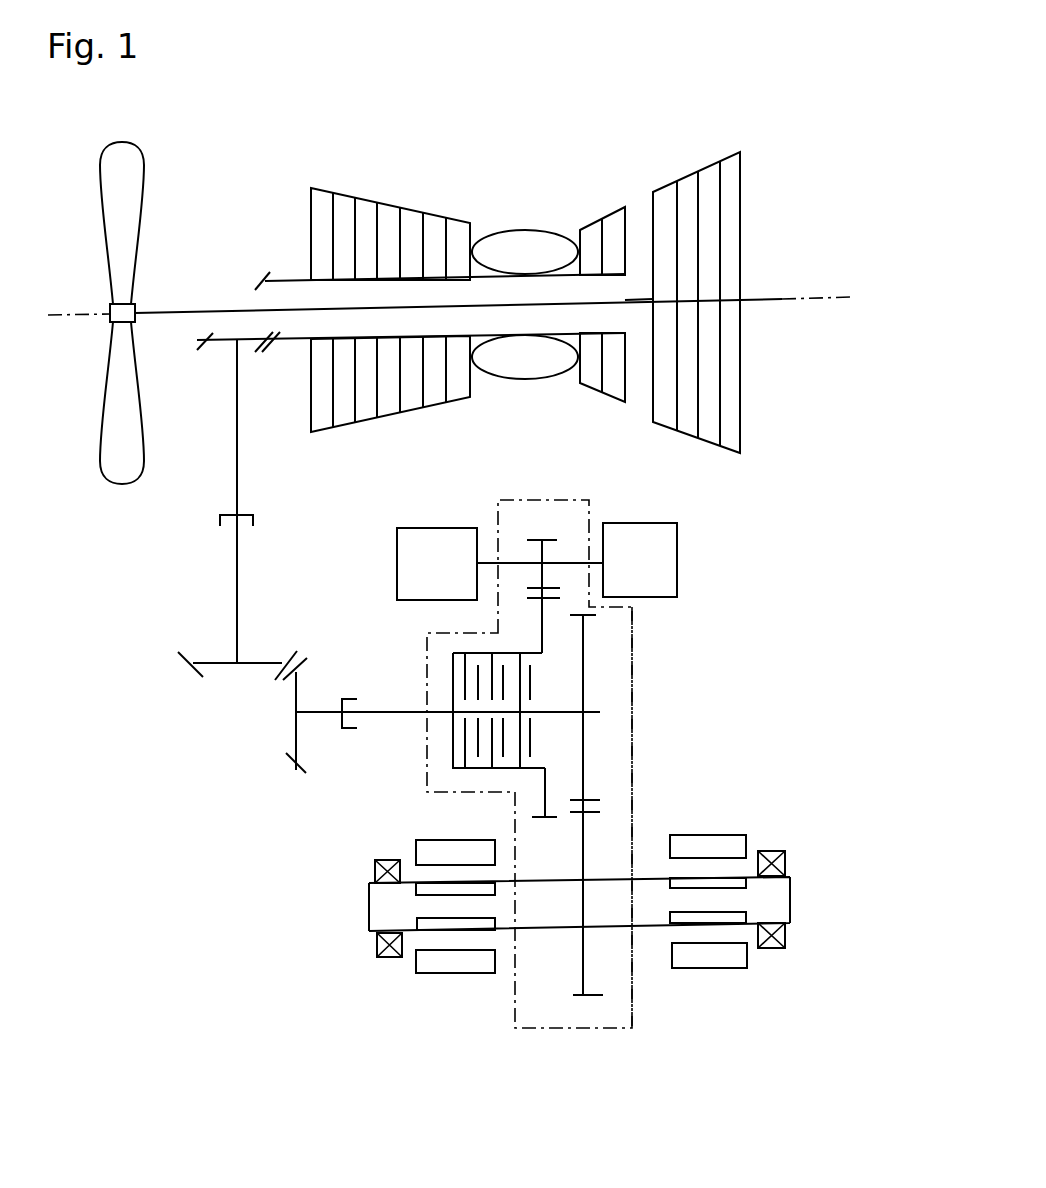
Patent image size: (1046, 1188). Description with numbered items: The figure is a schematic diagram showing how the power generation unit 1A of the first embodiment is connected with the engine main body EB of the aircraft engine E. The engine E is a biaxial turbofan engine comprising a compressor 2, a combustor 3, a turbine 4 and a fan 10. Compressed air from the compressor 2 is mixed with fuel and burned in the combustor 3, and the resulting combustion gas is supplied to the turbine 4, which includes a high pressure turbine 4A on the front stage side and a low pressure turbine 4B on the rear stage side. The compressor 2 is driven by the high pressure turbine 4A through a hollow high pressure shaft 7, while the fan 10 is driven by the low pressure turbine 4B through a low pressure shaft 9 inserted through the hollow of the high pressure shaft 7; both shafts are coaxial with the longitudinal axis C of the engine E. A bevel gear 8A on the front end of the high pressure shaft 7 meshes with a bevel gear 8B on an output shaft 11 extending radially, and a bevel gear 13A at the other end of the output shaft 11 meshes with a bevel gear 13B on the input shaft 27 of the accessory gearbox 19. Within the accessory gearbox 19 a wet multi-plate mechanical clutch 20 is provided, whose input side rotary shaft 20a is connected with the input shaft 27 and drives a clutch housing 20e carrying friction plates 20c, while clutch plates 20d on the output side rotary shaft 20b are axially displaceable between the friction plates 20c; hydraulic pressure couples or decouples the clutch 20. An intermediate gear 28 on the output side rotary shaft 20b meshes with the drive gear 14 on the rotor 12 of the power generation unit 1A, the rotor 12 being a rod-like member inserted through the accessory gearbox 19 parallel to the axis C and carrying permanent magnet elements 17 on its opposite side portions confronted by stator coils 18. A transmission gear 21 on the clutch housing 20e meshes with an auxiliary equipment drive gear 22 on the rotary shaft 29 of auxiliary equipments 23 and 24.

The power generation unit 1A is at (575, 890).
The compressor 2 is at (345, 207).
The combustor 3 is at (524, 243).
The turbine 4 is at (656, 254).
The high pressure turbine 4A is at (613, 222).
The low pressure turbine 4B is at (696, 281).
The high pressure shaft 7 is at (565, 345).
The bevel gear 8A is at (262, 280).
The bevel gear 8B is at (207, 338).
The low pressure shaft 9 is at (638, 303).
The fan 10 is at (150, 175).
The output shaft 11 is at (239, 443).
The rotor 12 is at (622, 918).
The bevel gear 13A is at (285, 655).
The bevel gear 13B is at (300, 770).
The drive gear 14 is at (583, 968).
The permanent magnet elements 17 is at (455, 924).
The stator coils 18 is at (428, 851).
The accessory gearbox 19 is at (642, 802).
The mechanical clutch 20 is at (525, 710).
The input side rotary shaft 20a is at (388, 715).
The output side rotary shaft 20b is at (562, 712).
The friction plates 20c is at (450, 658).
The clutch plates 20d is at (533, 690).
The clutch housing 20e is at (513, 792).
The transmission gear 21 is at (540, 614).
The auxiliary equipment drive gear 22 is at (543, 552).
The auxiliary equipment 23 is at (415, 530).
The auxiliary equipment 24 is at (678, 545).
The input shaft 27 is at (320, 716).
The intermediate gear 28 is at (585, 633).
The rotary shaft 29 is at (518, 560).
The longitudinal axis C is at (790, 297).
The aircraft engine E is at (397, 165).
The engine main body EB is at (437, 212).